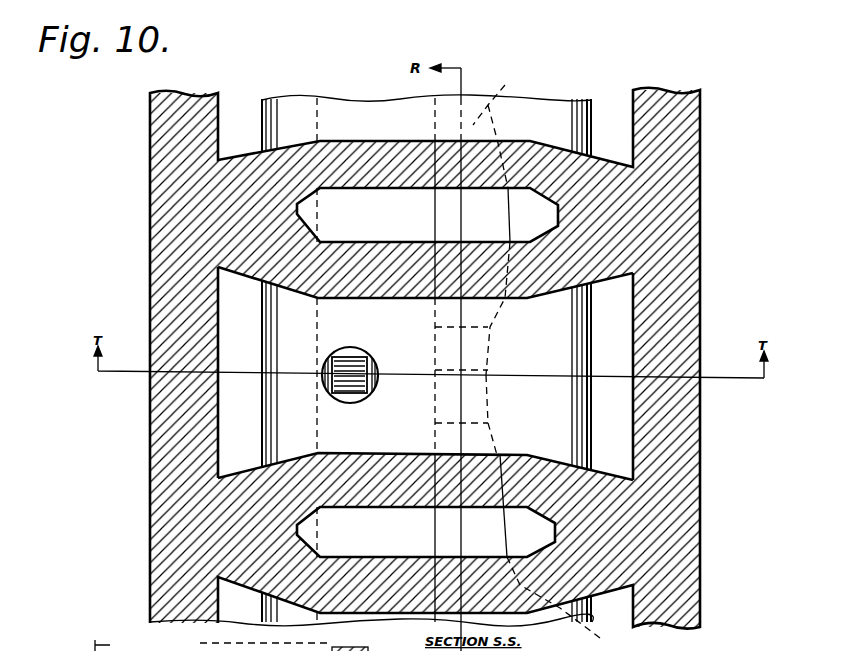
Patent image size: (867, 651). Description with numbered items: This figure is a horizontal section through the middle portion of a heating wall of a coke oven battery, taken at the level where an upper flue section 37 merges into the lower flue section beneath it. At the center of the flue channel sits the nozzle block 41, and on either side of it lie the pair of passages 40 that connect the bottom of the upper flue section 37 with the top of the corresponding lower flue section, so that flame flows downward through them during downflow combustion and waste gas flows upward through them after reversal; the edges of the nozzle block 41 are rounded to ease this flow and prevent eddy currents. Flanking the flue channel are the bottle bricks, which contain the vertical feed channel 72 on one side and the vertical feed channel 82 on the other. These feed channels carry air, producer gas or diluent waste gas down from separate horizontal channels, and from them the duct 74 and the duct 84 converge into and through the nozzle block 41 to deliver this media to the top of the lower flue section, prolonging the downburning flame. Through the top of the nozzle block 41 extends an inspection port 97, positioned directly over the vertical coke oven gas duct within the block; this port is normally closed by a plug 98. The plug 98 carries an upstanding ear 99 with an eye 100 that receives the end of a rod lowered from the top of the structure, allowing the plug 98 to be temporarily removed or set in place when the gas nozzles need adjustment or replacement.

The upper flue section 37 is at (541, 321).
The passage 40 is at (230, 330).
The nozzle block 41 is at (543, 428).
The vertical feed channel 72 is at (305, 214).
The duct 74 is at (512, 352).
The vertical feed channel 82 is at (300, 530).
The duct 84 is at (472, 405).
The inspection port 97 is at (372, 360).
The plug 98 is at (352, 349).
The upstanding ear 99 is at (356, 384).
The eye 100 is at (382, 647).